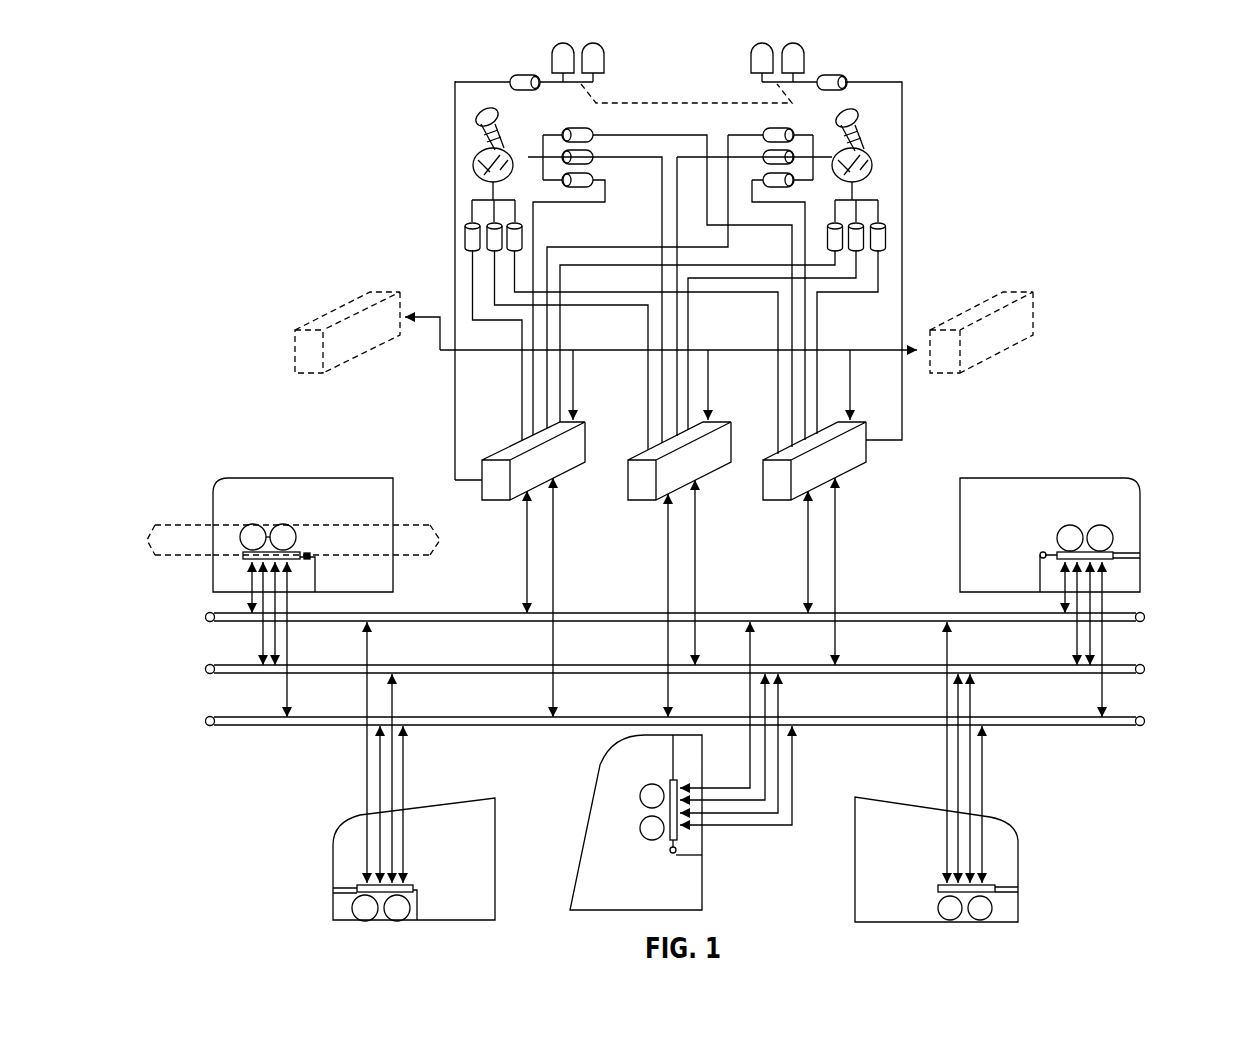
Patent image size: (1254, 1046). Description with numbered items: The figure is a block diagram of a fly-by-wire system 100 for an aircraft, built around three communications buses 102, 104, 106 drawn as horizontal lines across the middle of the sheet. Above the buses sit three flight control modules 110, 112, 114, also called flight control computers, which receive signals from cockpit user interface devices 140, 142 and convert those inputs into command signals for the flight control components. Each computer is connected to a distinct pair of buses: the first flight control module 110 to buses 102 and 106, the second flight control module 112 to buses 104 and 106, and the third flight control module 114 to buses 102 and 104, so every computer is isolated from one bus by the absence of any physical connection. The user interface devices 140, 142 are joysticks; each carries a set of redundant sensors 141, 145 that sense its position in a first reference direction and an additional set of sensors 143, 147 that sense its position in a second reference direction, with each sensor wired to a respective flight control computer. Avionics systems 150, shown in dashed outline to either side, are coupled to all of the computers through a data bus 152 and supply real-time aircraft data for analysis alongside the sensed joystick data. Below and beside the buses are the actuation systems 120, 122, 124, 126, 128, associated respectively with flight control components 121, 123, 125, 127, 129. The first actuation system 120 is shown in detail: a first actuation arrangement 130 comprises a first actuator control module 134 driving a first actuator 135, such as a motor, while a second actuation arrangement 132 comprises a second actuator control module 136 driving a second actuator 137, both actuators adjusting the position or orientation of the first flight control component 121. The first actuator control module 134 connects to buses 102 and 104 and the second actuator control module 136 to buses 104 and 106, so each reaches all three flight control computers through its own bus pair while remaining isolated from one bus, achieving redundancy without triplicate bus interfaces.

The fly-by-wire system 100 is at (1160, 80).
The first communications bus 102 is at (1143, 613).
The second communications bus 104 is at (1143, 665).
The third communications bus 106 is at (1143, 717).
The first flight control module 110 is at (510, 448).
The second flight control module 112 is at (630, 488).
The third flight control module 114 is at (770, 455).
The first actuation system 120 is at (320, 553).
The first flight control component 121 is at (390, 480).
The actuation system 122 is at (389, 771).
The flight control component 123 is at (495, 798).
The actuation system 124 is at (655, 846).
The flight control component 125 is at (600, 790).
The actuation system 126 is at (935, 885).
The flight control component 127 is at (855, 895).
The actuation system 128 is at (1056, 526).
The flight control component 129 is at (1132, 480).
The first actuation arrangement 130 is at (150, 540).
The second actuation arrangement 132 is at (440, 540).
The first actuator control module 134 is at (248, 565).
The first actuator 135 is at (250, 523).
The second actuator control module 136 is at (296, 530).
The second actuator 137 is at (280, 523).
The cockpit user interface device 140 is at (478, 153).
The set of redundant sensors 141 is at (457, 238).
The cockpit user interface device 142 is at (878, 148).
The set of sensors 143 is at (584, 190).
The set of redundant sensors 145 is at (825, 237).
The set of sensors 147 is at (790, 127).
The avionics systems 150 is at (295, 352).
The data bus 152 is at (627, 353).